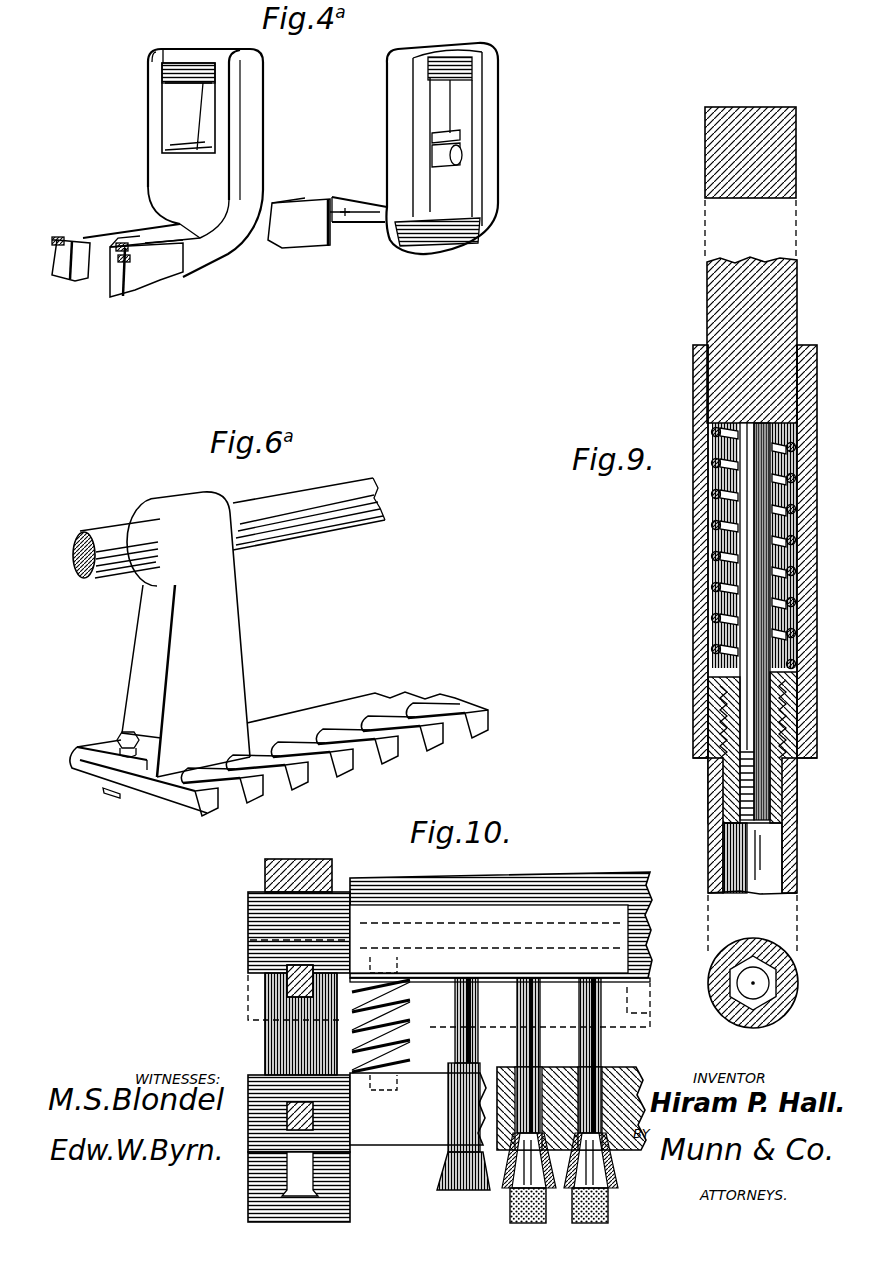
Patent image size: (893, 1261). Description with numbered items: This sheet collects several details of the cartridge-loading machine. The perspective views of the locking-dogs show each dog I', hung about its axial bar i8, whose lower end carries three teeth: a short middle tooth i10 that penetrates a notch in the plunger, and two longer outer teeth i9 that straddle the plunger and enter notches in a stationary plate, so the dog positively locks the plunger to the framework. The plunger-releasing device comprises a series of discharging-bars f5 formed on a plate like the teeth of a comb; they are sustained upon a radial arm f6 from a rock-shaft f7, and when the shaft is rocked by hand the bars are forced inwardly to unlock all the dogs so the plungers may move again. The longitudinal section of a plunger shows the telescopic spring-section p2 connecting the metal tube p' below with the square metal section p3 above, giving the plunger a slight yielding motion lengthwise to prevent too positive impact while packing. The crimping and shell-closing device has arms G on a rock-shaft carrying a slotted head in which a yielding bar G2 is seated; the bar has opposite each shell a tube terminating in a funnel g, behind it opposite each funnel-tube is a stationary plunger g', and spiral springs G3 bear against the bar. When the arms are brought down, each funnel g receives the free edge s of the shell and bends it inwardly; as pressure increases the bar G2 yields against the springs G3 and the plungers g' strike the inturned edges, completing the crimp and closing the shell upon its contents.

In FIG. 4A, the dog I' is at (297, 160).
In FIG. 4A, the axial bar i8 is at (202, 65).
In FIG. 4A, the outer teeth i9 is at (70, 238).
In FIG. 4A, the short middle tooth i10 is at (118, 240).
In FIG. 6A, the discharging-bars f5 is at (465, 697).
In FIG. 6A, the radial arm f6 is at (220, 666).
In FIG. 6A, the rock-shaft f7 is at (282, 506).
In FIG. 9, the telescopic spring-section p2 is at (700, 543).
In FIG. 9, the square metal section p3 is at (783, 145).
In FIG. 9, the metal tube p' is at (760, 893).
In FIG. 10, the arms G is at (287, 975).
In FIG. 10, the yielding bar G2 is at (450, 1040).
In FIG. 10, the spiral springs G3 is at (406, 1010).
In FIG. 10, the stationary plunger g' is at (550, 1064).
In FIG. 10, the funnel g is at (532, 1126).
In FIG. 10, the free edge of the shell s is at (510, 1213).